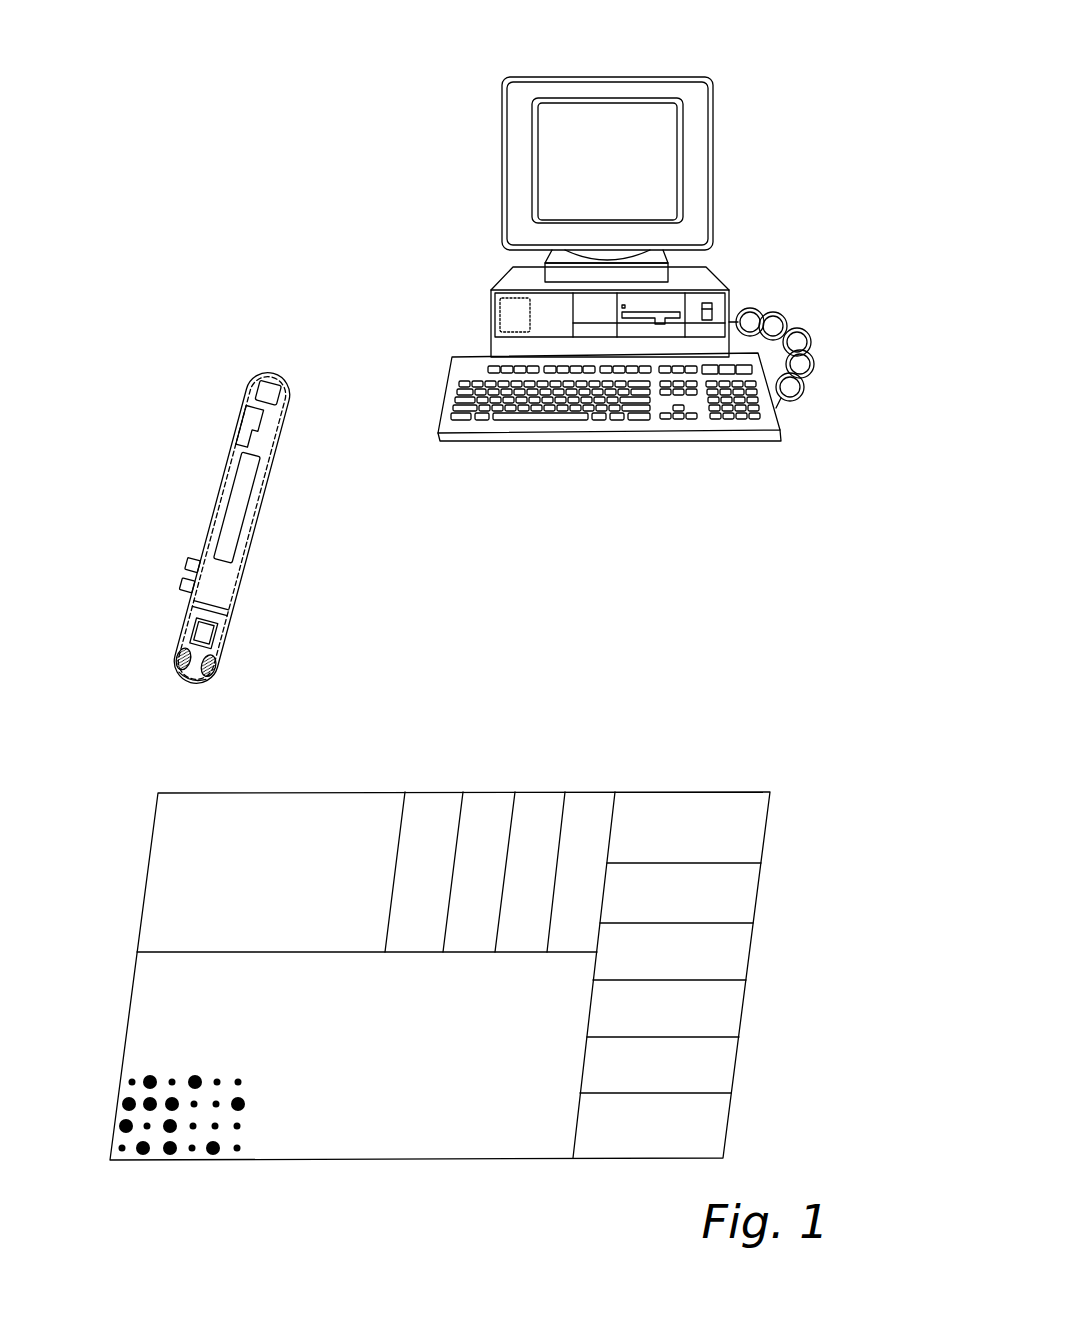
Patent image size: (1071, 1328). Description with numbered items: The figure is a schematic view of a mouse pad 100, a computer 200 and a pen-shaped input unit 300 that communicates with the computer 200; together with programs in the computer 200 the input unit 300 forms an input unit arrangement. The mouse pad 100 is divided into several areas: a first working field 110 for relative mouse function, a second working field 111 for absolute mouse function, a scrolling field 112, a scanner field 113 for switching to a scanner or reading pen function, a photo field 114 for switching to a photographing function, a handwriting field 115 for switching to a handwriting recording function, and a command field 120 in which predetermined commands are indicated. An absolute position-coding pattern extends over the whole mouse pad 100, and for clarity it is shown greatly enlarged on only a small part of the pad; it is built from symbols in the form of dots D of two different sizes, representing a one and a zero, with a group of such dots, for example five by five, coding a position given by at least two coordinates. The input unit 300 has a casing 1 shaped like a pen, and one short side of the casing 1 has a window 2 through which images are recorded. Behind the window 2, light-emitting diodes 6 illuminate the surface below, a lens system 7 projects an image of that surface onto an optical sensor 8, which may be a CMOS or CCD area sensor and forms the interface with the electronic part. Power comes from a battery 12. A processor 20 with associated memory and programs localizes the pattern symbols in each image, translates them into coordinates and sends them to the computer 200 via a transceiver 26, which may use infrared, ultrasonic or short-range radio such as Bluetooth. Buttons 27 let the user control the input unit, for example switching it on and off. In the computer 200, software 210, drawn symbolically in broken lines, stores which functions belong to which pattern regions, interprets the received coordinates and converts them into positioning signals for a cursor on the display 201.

The computer 200 is at (590, 77).
The display 201 is at (570, 162).
The software 210 is at (517, 317).
The input unit 300 is at (204, 484).
The casing 1 is at (256, 542).
The transceiver 26 is at (268, 392).
The battery 12 is at (237, 420).
The processor 20 is at (232, 525).
The buttons 27 is at (177, 584).
The optical sensor 8 is at (228, 607).
The lens system 7 is at (191, 632).
The light-emitting diodes 6 is at (222, 664).
The window 2 is at (196, 689).
The mouse pad 100 is at (185, 998).
The first working field 110 is at (375, 1125).
The second working field 111 is at (272, 836).
The scrolling field 112 is at (452, 803).
The scanner field 113 is at (485, 803).
The photo field 114 is at (547, 802).
The handwriting field 115 is at (603, 800).
The command field 120 is at (755, 936).
The dots D is at (169, 1154).